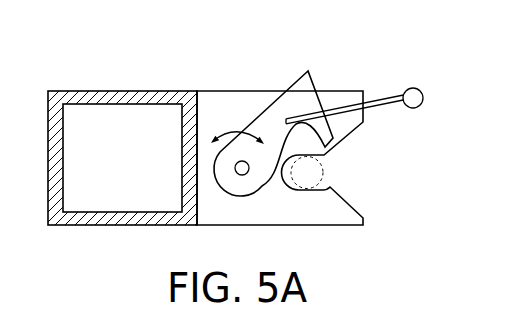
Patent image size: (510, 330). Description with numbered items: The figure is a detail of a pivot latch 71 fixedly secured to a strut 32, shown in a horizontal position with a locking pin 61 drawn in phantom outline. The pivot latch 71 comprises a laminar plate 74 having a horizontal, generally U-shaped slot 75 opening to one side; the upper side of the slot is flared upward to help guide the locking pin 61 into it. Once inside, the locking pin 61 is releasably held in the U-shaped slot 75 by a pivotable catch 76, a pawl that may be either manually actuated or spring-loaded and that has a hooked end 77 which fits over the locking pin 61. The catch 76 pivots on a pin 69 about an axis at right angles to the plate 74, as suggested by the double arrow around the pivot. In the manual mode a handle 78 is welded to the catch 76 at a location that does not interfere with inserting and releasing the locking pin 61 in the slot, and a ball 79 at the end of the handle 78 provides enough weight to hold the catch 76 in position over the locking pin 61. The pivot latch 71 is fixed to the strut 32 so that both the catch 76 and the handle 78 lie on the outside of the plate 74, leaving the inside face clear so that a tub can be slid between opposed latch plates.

The strut 32 is at (118, 225).
The pivot latch 71 is at (176, 86).
The laminar plate 74 is at (217, 97).
The pivotable catch 76 is at (262, 113).
The pin 69 is at (249, 173).
The hooked end 77 is at (338, 141).
The handle 78 is at (393, 94).
The ball 79 is at (423, 101).
The locking pin 61 is at (323, 172).
The U-shaped slot 75 is at (334, 183).